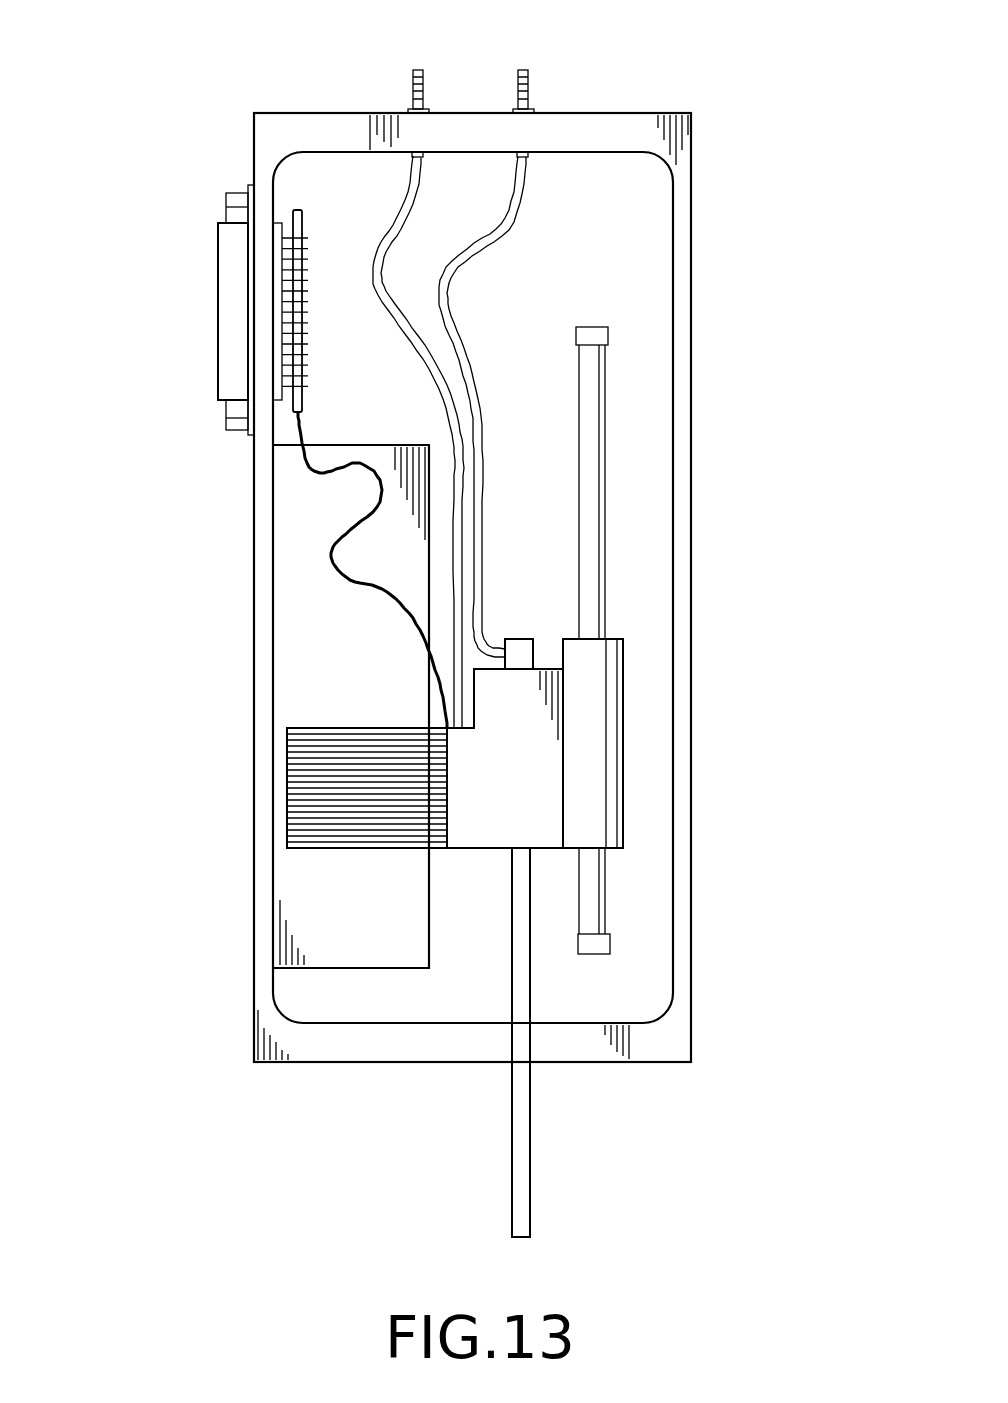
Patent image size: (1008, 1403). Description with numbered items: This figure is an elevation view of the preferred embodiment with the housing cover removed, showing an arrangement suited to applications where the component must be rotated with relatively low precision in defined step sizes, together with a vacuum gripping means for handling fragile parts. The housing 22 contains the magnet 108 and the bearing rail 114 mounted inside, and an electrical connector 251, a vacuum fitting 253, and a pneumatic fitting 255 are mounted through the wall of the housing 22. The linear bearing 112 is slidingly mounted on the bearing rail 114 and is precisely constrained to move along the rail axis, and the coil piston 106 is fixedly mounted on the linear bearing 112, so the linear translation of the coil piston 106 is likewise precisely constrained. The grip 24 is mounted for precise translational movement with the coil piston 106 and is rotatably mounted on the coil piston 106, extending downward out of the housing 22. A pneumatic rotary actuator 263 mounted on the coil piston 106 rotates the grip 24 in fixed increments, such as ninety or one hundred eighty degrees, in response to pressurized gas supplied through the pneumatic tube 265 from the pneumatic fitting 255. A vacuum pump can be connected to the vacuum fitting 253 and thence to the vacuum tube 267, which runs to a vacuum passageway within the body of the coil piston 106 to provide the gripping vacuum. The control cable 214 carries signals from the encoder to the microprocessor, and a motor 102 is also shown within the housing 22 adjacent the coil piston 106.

The housing 22 is at (693, 963).
The grip 24 is at (510, 1150).
The motor 102 is at (312, 777).
The coil piston 106 is at (540, 808).
The magnet 108 is at (317, 913).
The linear bearing 112 is at (597, 719).
The bearing rail 114 is at (593, 425).
The control cable 214 is at (330, 555).
The electrical connector 251 is at (232, 302).
The vacuum fitting 253 is at (413, 72).
The pneumatic fitting 255 is at (530, 72).
The pneumatic rotary actuator 263 is at (519, 638).
The pneumatic tube 265 is at (522, 200).
The vacuum tube 267 is at (393, 213).